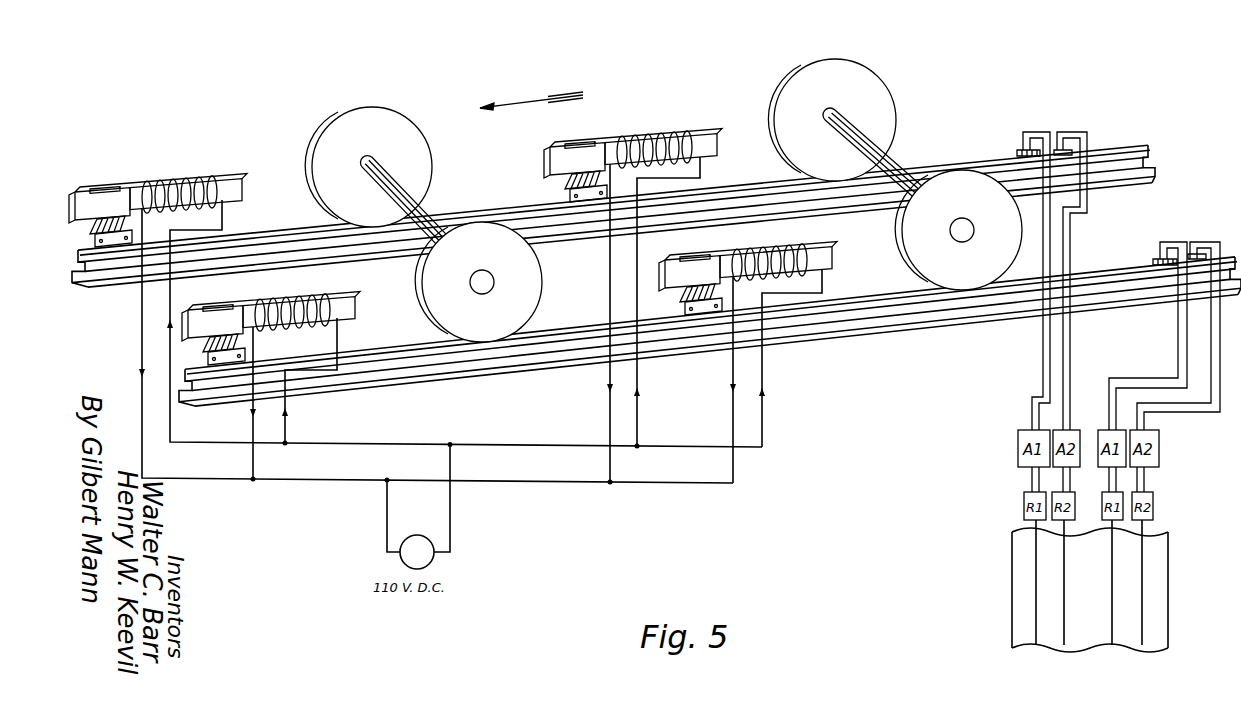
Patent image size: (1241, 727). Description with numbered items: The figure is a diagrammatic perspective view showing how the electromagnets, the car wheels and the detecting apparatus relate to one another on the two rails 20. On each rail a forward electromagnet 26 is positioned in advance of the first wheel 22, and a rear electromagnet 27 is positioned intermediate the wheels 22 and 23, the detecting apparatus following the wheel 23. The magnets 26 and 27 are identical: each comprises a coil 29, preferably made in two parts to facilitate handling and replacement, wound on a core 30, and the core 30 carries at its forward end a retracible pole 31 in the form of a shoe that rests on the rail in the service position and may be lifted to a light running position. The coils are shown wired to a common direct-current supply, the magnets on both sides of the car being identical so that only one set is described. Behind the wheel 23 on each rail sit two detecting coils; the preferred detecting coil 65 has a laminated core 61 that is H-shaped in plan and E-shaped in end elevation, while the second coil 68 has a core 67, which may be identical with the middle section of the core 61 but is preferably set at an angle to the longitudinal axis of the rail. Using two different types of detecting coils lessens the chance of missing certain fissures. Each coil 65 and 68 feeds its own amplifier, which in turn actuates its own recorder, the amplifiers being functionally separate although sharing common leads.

The track rails 20 is at (656, 275).
The wheel 22 is at (368, 107).
The wheel 23 is at (861, 60).
The forward electromagnet 26 is at (205, 174).
The rear electromagnet 27 is at (674, 129).
The coil 29 is at (174, 179).
The core 30 is at (243, 188).
The retracible pole 31 is at (135, 226).
The core 61 is at (1017, 152).
The detecting coil 65 is at (1023, 143).
The core 67 is at (1057, 147).
The second coil 68 is at (1071, 138).